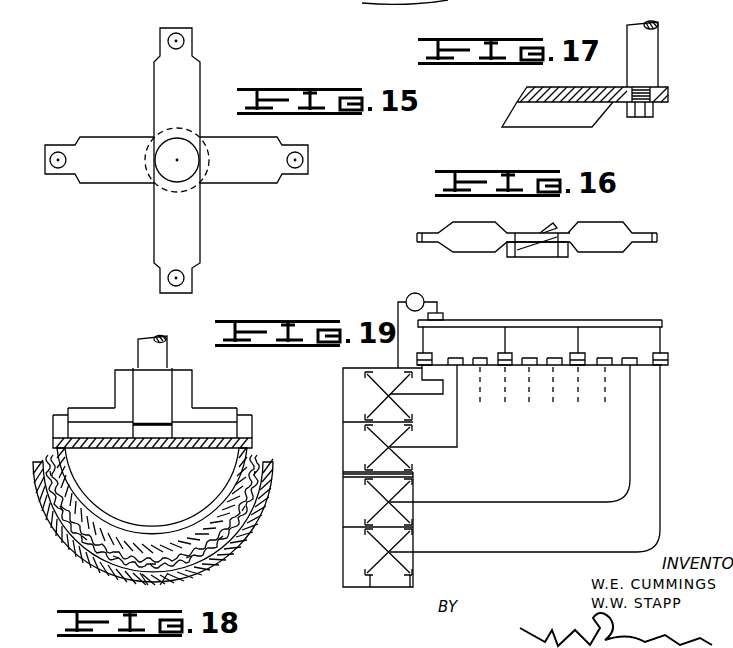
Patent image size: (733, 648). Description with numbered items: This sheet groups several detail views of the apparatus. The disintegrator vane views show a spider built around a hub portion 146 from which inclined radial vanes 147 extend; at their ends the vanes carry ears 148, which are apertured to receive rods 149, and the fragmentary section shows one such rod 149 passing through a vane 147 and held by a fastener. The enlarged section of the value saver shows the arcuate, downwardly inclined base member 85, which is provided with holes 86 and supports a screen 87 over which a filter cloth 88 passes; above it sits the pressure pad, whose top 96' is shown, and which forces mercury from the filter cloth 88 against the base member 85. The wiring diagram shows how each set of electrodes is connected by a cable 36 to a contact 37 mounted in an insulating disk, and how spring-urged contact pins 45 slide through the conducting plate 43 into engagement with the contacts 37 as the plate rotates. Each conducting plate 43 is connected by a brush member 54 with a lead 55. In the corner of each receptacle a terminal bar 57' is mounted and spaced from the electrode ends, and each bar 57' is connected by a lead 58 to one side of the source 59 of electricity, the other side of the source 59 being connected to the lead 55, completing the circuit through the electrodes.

In FIG. 15, the ears 148 is at (296, 146).
In FIG. 17, the ears 148 is at (658, 85).
In FIG. 15, the hub portion 146 is at (188, 190).
In FIG. 16, the hub portion 146 is at (572, 257).
In FIG. 17, the rod 149 is at (658, 45).
In FIG. 17, the radial vane 147 is at (606, 66).
In FIG. 16, the radial vane 147 is at (610, 222).
In FIG. 18, the top of pressure pad 96' is at (179, 392).
In FIG. 18, the filter cloth 88 is at (253, 467).
In FIG. 18, the screen 87 is at (261, 465).
In FIG. 18, the holes 86 is at (256, 528).
In FIG. 18, the base member 85 is at (248, 522).
In FIG. 19, the source of electricity 59 is at (423, 296).
In FIG. 19, the lead 55 is at (443, 312).
In FIG. 19, the brush member 54 is at (448, 320).
In FIG. 19, the conducting plate 43 is at (553, 320).
In FIG. 19, the contact 37 is at (648, 340).
In FIG. 19, the contact pin 45 is at (663, 352).
In FIG. 19, the cable 36 is at (457, 436).
In FIG. 19, the lead 58 is at (343, 458).
In FIG. 19, the terminal bar 57' is at (398, 481).